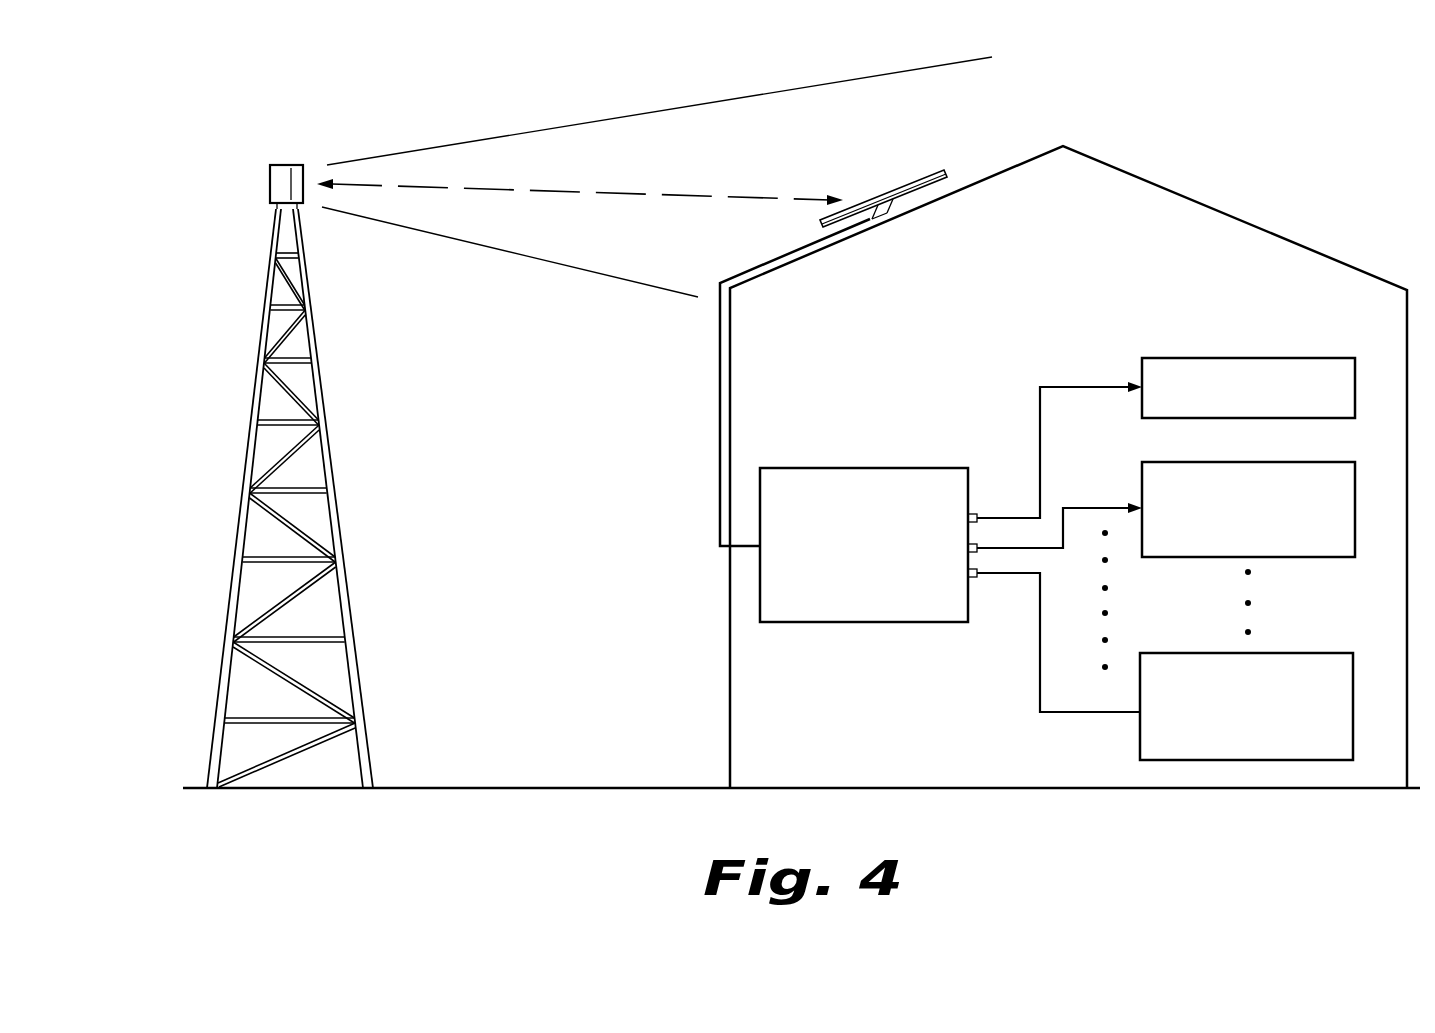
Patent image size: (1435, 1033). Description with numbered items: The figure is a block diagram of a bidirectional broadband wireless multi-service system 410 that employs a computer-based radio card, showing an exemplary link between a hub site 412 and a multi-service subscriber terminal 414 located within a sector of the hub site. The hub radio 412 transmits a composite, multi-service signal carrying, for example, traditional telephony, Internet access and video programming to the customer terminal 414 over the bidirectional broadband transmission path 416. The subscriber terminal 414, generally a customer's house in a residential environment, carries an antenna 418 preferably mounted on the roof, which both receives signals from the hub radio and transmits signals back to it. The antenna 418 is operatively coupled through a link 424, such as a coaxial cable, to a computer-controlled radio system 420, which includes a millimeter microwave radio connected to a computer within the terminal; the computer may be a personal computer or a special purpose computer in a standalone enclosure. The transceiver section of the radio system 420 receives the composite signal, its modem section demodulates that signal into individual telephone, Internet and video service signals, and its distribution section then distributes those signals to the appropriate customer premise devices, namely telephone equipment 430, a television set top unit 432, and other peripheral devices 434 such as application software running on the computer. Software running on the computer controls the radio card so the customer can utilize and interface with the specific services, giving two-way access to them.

The bidirectional broadband wireless multi-service system 410 is at (555, 112).
The hub site 412 is at (270, 182).
The multi-service subscriber terminal 414 is at (1258, 212).
The bidirectional broadband transmission path 416 is at (513, 251).
The antenna 418 is at (912, 188).
The computer-controlled radio system 420 is at (833, 467).
The link 424 is at (718, 477).
The telephone equipment 430 is at (1305, 357).
The television set top unit 432 is at (1310, 462).
The other peripheral devices 434 is at (1308, 652).